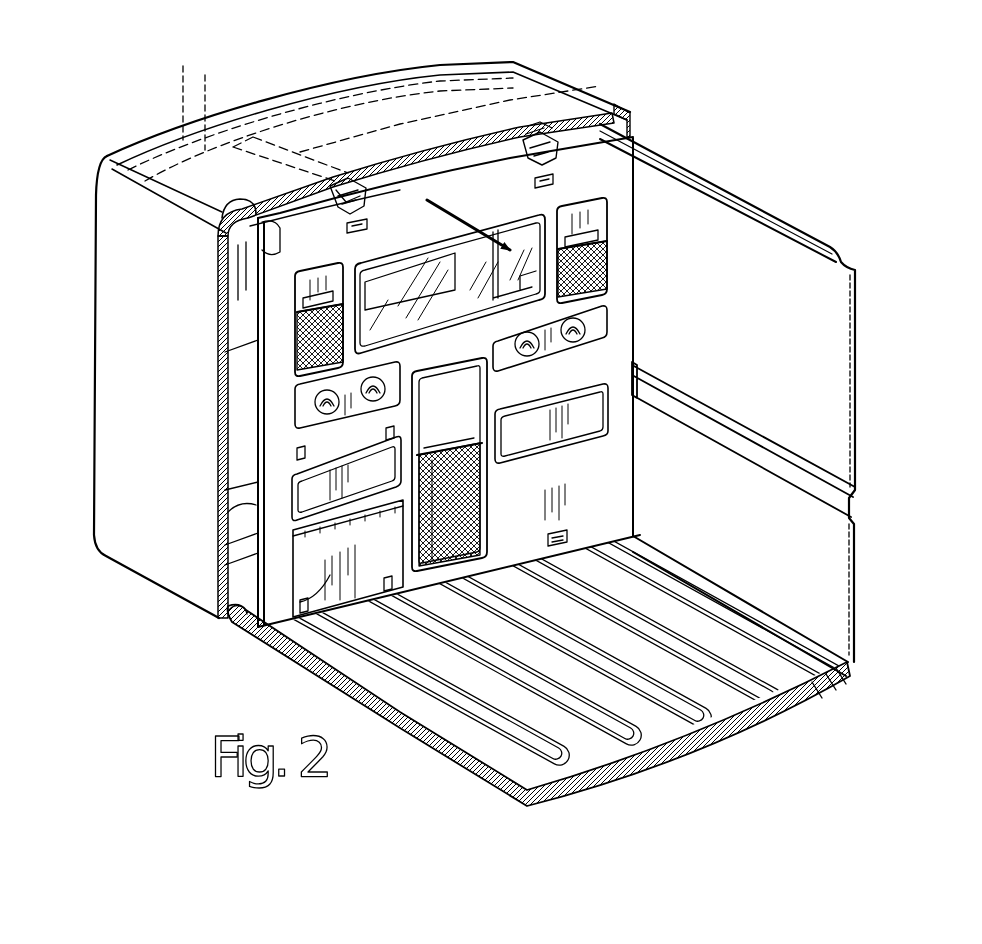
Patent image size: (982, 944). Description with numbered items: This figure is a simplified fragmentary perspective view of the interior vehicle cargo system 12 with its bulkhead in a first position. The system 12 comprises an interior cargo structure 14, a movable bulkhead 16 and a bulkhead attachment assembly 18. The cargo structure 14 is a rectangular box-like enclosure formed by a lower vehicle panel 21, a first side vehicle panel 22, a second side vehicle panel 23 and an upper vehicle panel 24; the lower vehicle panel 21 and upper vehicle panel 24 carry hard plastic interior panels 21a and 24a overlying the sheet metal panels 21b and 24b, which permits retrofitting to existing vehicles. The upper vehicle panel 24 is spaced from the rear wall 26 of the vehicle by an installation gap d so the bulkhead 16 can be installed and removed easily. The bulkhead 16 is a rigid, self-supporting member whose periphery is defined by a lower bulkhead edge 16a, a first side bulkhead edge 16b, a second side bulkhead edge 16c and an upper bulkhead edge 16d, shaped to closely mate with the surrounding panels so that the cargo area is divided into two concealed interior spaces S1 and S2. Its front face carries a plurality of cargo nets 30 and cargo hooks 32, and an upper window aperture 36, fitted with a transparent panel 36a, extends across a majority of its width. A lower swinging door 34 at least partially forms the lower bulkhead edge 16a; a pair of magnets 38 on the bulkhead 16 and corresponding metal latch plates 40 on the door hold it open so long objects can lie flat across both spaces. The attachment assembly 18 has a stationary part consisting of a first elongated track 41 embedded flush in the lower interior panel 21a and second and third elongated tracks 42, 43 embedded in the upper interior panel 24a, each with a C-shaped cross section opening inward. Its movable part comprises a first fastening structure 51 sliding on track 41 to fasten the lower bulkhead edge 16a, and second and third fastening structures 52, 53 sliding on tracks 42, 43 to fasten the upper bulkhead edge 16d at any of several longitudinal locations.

The interior vehicle cargo system 12 is at (612, 98).
The interior cargo structure 14 is at (785, 225).
The movable bulkhead 16 is at (417, 366).
The lower bulkhead edge 16a is at (494, 570).
The first side bulkhead edge 16b is at (212, 605).
The second side bulkhead edge 16c is at (634, 462).
The upper bulkhead edge 16d is at (443, 157).
The bulkhead attachment assembly 18 is at (536, 110).
The lower vehicle panel 21 is at (551, 661).
The hard plastic interior panel 21a is at (818, 712).
The sheet metal panel 21b is at (730, 748).
The first side vehicle panel 22 is at (160, 556).
The second side vehicle panel 23 is at (856, 320).
The upper vehicle panel 24 is at (367, 172).
The hard plastic interior panel 24a is at (310, 202).
The sheet metal panel 24b is at (224, 213).
The rear wall 26 is at (462, 66).
The cargo nets 30 is at (600, 268).
The cargo hooks 32 is at (583, 330).
The lower swinging door 34 is at (233, 630).
The upper window aperture 36 is at (545, 226).
The transparent panel 36a is at (393, 275).
The magnets 38 is at (385, 433).
The metal latch plates 40 is at (386, 592).
The first elongated track 41 is at (633, 554).
The second elongated track 42 is at (337, 178).
The third elongated track 43 is at (528, 126).
The first fastening structure 51 is at (568, 530).
The second fastening structure 52 is at (332, 178).
The third fastening structure 53 is at (562, 157).
The first interior space S1 is at (697, 238).
The second interior space S2 is at (246, 368).
The installation gap d is at (231, 101).